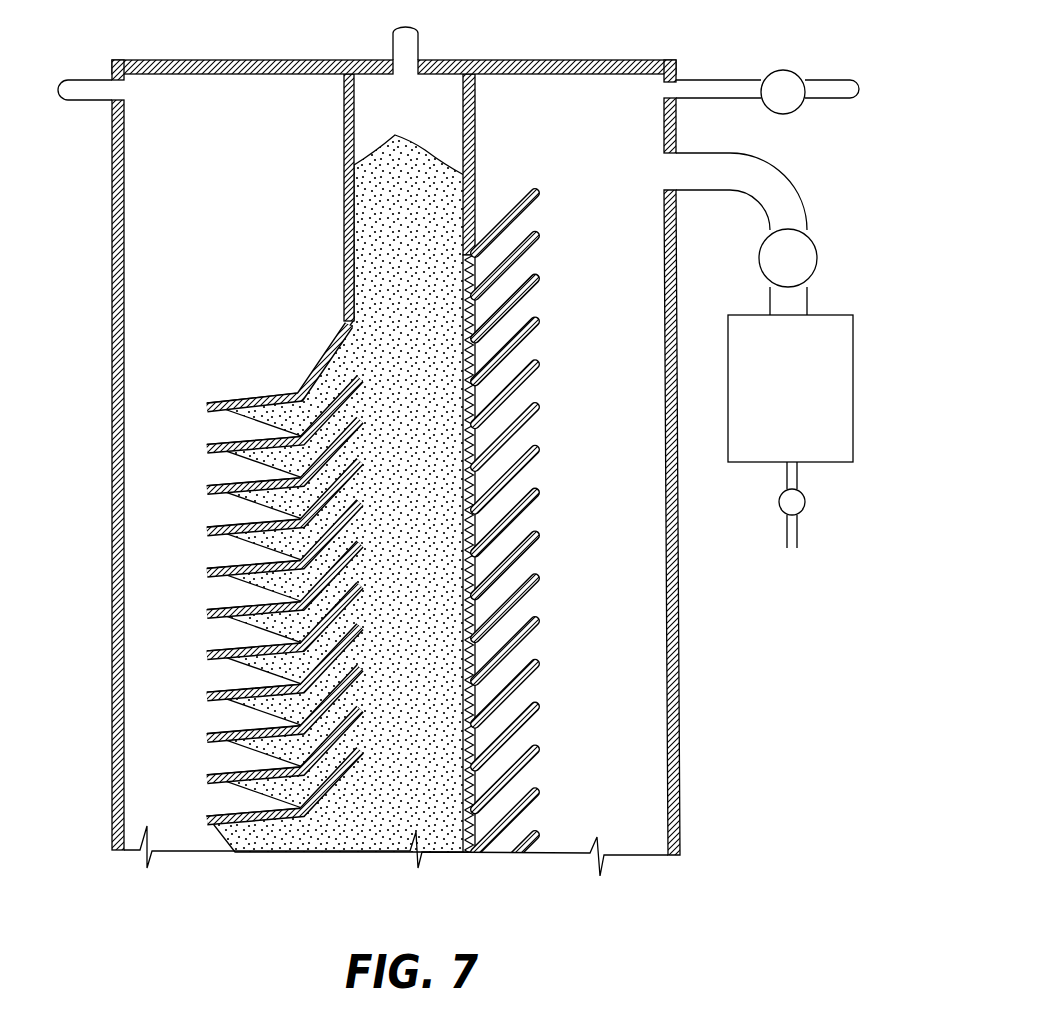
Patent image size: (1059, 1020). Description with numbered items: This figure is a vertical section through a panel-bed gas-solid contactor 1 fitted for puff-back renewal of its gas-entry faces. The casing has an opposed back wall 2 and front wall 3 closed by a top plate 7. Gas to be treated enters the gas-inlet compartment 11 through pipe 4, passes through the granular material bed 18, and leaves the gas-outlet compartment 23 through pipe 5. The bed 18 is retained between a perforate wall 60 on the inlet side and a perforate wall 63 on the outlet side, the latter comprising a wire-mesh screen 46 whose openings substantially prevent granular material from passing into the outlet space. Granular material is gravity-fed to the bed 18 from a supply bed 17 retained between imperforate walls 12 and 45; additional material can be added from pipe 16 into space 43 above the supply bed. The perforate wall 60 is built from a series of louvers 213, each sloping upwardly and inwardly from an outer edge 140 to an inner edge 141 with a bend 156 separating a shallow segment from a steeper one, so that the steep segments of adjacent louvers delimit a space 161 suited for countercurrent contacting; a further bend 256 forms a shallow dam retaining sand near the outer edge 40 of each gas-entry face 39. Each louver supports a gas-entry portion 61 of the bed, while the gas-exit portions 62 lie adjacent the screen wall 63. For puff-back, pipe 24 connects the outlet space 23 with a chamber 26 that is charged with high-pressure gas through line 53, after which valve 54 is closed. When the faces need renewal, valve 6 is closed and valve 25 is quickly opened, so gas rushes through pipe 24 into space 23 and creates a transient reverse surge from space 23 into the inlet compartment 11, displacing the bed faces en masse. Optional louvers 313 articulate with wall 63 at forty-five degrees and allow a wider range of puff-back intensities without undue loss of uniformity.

The panel-bed gas-solid contactor 1 is at (92, 630).
The back wall 2 is at (681, 690).
The front wall 3 is at (112, 318).
The pipe 4 is at (88, 105).
The pipe 5 is at (697, 80).
The valve 6 is at (800, 76).
The top plate 7 is at (268, 60).
The gas-inlet compartment 11 is at (228, 178).
The imperforate wall 12 is at (344, 292).
The pipe 16 is at (393, 54).
The supply bed 17 is at (421, 250).
The granular material bed 18 is at (436, 588).
The gas-outlet compartment 23 is at (620, 191).
The pipe 24 is at (790, 182).
The valve 25 is at (818, 250).
The chamber 26 is at (805, 396).
The gas-entry face 39 is at (225, 518).
The outer edge 40 is at (215, 560).
The space 43 is at (396, 113).
The imperforate wall 45 is at (462, 217).
The wire-mesh screen 46 is at (462, 556).
The line 53 is at (798, 480).
The valve 54 is at (803, 510).
The perforate wall 60 is at (281, 447).
The gas-entry portion 61 is at (268, 463).
The gas-exit portion 62 is at (448, 819).
The perforate wall 63 is at (460, 470).
The outer edge 140 is at (208, 696).
The inner edge 141 is at (368, 628).
The bend 156 is at (245, 711).
The space 161 is at (330, 413).
The louver 213 is at (225, 766).
The bend 256 is at (215, 750).
The louver 313 is at (520, 468).